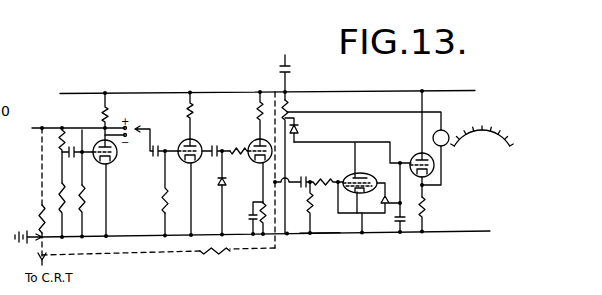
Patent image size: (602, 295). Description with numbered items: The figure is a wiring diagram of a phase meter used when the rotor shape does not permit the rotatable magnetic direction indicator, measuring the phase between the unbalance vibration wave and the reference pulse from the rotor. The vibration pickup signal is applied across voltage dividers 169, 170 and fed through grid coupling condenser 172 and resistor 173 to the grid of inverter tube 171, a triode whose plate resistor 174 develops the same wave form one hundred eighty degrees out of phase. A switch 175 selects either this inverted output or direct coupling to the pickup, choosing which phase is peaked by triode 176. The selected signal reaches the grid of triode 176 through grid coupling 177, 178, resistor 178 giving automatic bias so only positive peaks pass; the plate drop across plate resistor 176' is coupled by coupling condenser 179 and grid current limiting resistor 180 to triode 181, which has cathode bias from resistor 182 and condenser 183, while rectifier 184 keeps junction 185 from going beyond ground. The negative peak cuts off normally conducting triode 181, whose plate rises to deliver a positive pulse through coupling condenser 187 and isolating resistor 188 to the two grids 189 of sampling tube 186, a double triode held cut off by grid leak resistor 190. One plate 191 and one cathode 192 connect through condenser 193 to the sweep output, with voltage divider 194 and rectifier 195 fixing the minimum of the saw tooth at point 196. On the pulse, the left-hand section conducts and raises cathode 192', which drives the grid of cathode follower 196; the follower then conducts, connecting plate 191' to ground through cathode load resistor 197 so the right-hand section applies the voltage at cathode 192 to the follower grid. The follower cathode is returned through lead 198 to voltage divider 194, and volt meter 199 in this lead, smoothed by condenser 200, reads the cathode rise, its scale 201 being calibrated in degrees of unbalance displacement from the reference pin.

The voltage divider 169 is at (58, 140).
The voltage divider 170 is at (44, 202).
The inverter tube 171 is at (115, 158).
The grid coupling condenser 172 is at (80, 130).
The resistor 173 is at (84, 195).
The plate resistor 174 is at (107, 108).
The switch 175 is at (147, 118).
The triode 176 is at (178, 178).
The plate resistor 176' is at (205, 103).
The grid coupling 177 is at (163, 190).
The resistor 178 is at (164, 210).
The coupling condenser 179 is at (214, 146).
The grid current limiting resistor 180 is at (256, 112).
The triode 181 is at (233, 185).
The resistor 182 is at (258, 206).
The condenser 183 is at (252, 219).
The rectifier 184 is at (221, 186).
The junction 185 is at (236, 147).
The sampling tube 186 is at (350, 195).
The coupling condenser 187 is at (318, 182).
The isolating resistor 188 is at (324, 207).
The grids 189 is at (352, 170).
The grid leak resistor 190 is at (320, 234).
The plate 191 is at (365, 163).
The plate 191' is at (379, 152).
The cathode 192 is at (386, 197).
The cathode 192' is at (371, 224).
The condenser 193 is at (287, 71).
The voltage divider 194 is at (291, 110).
The rectifier 195 is at (298, 128).
The cathode follower 196 is at (433, 168).
The cathode load resistor 197 is at (427, 207).
The lead 198 is at (427, 110).
The volt meter 199 is at (447, 130).
The condenser 200 is at (407, 230).
The scale 201 is at (487, 120).